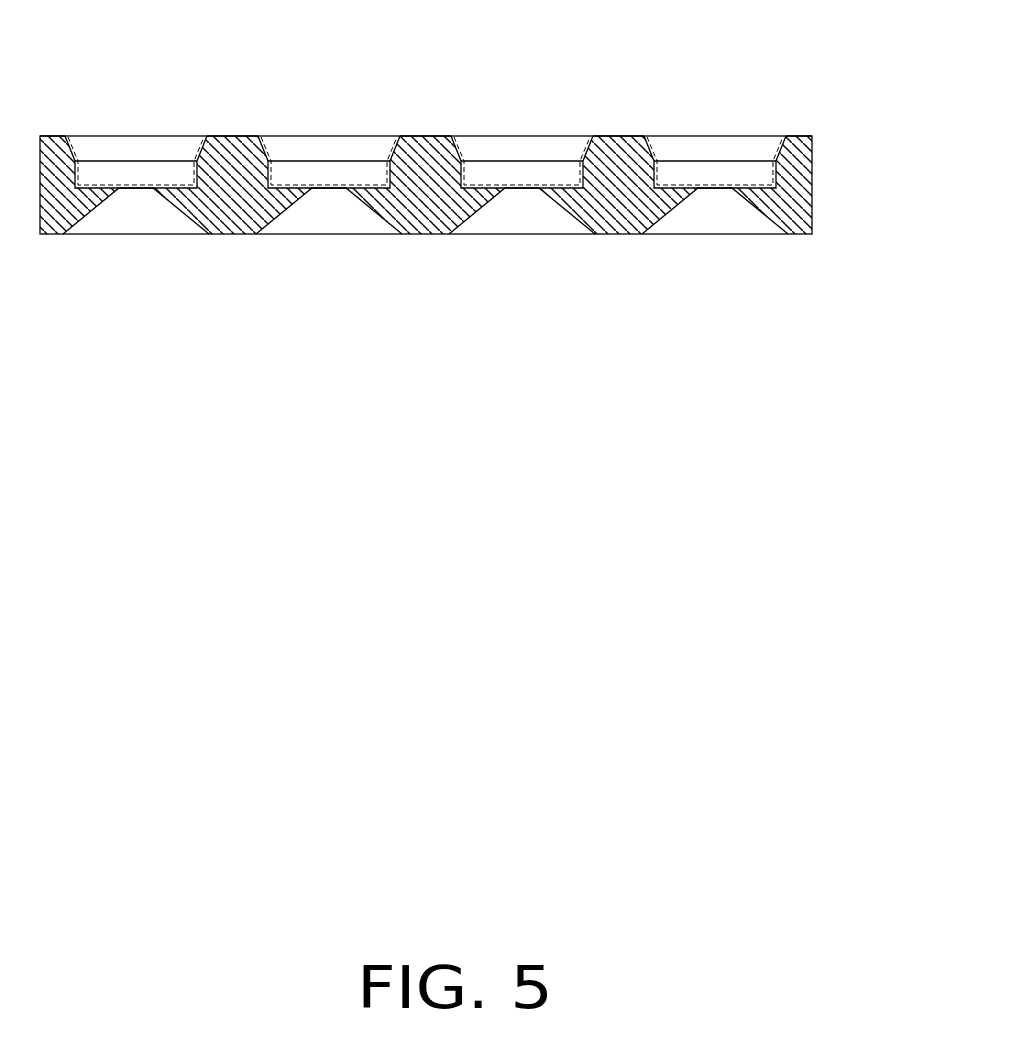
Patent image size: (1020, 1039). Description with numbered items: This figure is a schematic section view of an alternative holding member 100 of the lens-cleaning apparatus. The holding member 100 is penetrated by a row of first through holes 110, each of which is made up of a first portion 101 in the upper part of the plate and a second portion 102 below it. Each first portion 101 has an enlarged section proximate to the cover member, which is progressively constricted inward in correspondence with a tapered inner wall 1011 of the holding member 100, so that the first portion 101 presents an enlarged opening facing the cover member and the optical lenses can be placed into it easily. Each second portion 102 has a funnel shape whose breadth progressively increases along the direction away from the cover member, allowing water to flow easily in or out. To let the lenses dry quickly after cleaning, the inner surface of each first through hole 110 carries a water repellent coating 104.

The holding member 100 is at (426, 120).
The first portion 101 is at (513, 173).
The tapered inner wall 1011 is at (263, 138).
The second portion 102 is at (723, 213).
The water repellent coating 104 is at (80, 167).
The first through hole 110 is at (716, 190).